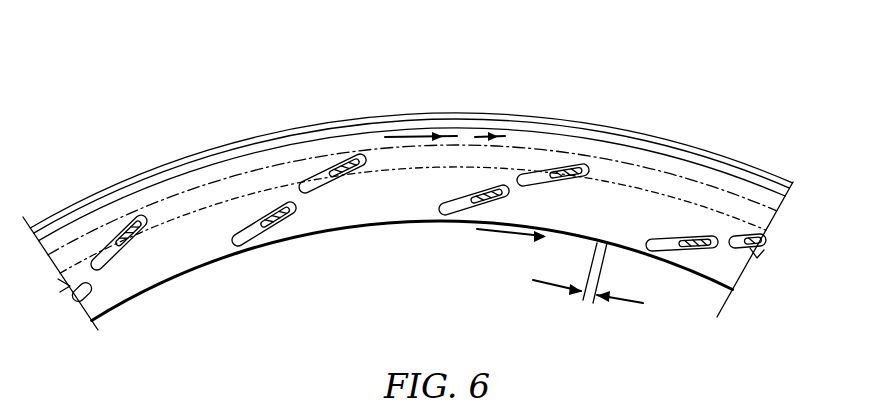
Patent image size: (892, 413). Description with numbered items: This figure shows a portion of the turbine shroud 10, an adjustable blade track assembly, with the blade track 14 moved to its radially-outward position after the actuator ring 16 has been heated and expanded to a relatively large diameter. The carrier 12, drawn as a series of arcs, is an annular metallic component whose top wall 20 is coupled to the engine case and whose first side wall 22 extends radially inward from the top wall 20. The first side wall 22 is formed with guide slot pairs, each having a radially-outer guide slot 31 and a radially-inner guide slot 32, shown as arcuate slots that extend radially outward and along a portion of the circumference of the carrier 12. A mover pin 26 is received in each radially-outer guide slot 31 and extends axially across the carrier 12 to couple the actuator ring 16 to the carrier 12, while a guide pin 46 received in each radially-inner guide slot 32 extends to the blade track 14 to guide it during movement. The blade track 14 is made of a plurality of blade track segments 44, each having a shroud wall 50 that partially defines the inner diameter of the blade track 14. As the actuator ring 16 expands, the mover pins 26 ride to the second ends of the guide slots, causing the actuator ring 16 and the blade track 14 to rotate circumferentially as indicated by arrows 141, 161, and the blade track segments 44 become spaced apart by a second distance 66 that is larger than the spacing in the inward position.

The turbine shroud 10 is at (401, 195).
The carrier 12 is at (283, 124).
The blade track 14 is at (288, 266).
The actuator ring 16 is at (659, 166).
The top wall 20 is at (458, 108).
The first side wall 22 is at (505, 135).
The mover pin 26 is at (130, 238).
The radially-outer guide slot 31 is at (125, 233).
The radially-inner guide slot 32 is at (260, 227).
The blade track segment 44 is at (127, 312).
The guide pin 46 is at (272, 232).
The shroud wall 50 is at (175, 284).
The second distance 66 is at (636, 304).
The arrow 141 is at (493, 240).
The arrow 161 is at (413, 135).